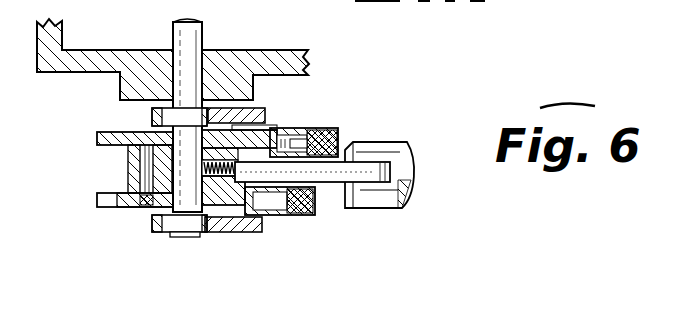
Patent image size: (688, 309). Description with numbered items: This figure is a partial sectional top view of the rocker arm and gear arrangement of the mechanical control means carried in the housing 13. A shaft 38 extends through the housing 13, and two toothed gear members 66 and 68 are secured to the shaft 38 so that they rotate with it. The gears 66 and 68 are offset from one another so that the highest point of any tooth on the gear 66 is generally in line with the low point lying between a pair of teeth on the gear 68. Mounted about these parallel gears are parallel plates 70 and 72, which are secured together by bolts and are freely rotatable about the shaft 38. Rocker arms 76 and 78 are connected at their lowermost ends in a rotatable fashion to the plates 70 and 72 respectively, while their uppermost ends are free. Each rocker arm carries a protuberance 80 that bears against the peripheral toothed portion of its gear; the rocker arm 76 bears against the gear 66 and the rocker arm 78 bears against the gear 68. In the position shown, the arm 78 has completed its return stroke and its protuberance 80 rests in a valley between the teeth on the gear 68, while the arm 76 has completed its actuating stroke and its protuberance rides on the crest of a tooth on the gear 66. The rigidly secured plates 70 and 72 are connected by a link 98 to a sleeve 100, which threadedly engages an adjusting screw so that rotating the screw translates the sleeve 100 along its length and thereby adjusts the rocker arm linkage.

The housing 13 is at (243, 65).
The shaft 38 is at (205, 33).
The toothed gear member 66 is at (97, 134).
The toothed gear member 68 is at (97, 200).
The plate 70 is at (152, 113).
The plate 72 is at (152, 226).
The rocker arm 76 is at (333, 128).
The rocker arm 78 is at (303, 216).
The protuberance 80 is at (296, 110).
The link 98 is at (363, 170).
The sleeve 100 is at (373, 210).